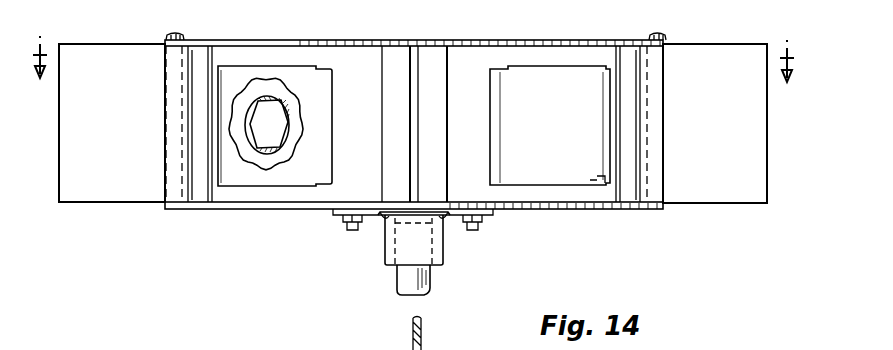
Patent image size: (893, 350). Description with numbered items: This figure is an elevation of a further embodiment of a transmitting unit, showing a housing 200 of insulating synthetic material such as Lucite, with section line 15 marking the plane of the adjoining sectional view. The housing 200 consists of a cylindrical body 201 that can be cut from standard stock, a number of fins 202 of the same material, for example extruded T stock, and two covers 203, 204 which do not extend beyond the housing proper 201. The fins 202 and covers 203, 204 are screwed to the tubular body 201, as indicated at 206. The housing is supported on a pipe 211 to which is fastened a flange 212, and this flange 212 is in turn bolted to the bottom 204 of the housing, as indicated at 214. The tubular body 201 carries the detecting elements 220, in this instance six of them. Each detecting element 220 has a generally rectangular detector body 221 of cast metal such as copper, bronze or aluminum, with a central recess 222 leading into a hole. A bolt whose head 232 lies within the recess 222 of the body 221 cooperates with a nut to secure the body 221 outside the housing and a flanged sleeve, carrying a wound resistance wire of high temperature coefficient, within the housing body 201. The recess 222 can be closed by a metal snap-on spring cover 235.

The section line 15- 15 is at (409, 46).
The housing 200 is at (279, 220).
The cylindrical body 201 is at (178, 95).
The fins 202 is at (108, 188).
The cover 203 is at (307, 44).
The cover 204 is at (312, 206).
The screw 206 is at (178, 34).
The pipe 211 is at (431, 283).
The flange 212 is at (437, 248).
The bolt 214 is at (352, 231).
The detecting element 220 is at (573, 60).
The detector body 221 is at (332, 85).
The central recess 222 is at (267, 96).
The bolt head 232 is at (270, 109).
The snap-on spring cover 235 is at (587, 180).